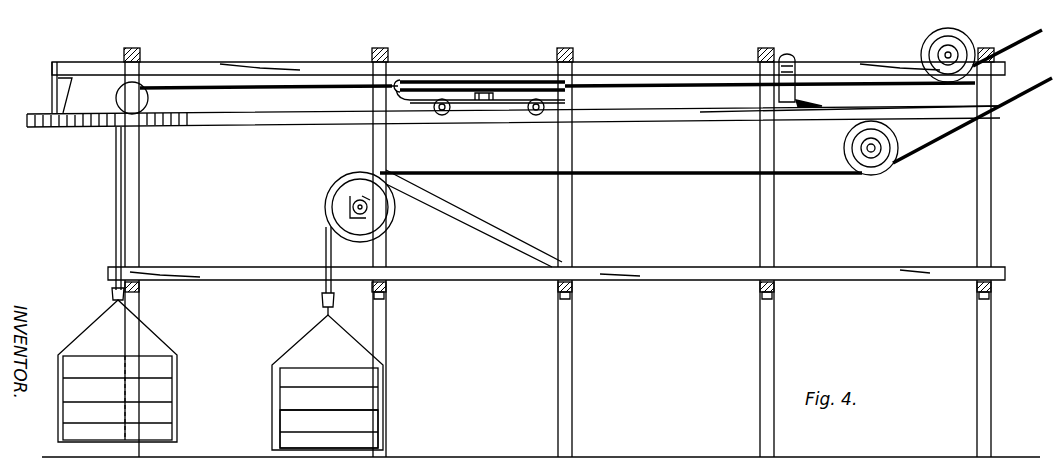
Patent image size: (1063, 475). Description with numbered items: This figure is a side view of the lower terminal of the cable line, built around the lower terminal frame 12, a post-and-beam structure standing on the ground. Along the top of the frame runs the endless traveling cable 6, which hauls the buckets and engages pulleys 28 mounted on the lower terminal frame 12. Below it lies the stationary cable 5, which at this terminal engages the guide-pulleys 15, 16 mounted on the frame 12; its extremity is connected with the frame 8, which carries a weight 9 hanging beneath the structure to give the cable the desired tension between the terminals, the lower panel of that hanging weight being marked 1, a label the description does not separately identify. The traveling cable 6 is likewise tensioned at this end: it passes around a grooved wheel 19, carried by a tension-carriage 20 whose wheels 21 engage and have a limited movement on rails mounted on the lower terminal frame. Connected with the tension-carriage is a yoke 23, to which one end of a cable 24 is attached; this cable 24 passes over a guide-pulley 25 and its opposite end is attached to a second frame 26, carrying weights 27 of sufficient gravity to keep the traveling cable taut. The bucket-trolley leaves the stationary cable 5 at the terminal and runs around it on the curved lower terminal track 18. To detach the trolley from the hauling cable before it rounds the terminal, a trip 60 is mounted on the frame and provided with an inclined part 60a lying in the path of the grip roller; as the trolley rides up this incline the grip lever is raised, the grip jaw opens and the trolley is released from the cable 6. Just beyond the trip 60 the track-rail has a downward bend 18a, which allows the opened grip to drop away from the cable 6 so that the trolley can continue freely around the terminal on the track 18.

The bucket 1 is at (329, 429).
The stationary cable 5 is at (648, 172).
The endless traveling cable 6 is at (662, 84).
The frame 8 is at (292, 347).
The weight 9 is at (329, 408).
The lower terminal frame 12 is at (558, 259).
The guide-pulley 15 is at (845, 148).
The guide-pulley 16 is at (348, 181).
The lower terminal track 18 is at (273, 124).
The downward bend in the track-rail 18a is at (738, 118).
The wheel 19 is at (492, 80).
The tension-carriage 20 is at (497, 104).
The wheels 21 is at (443, 116).
The yoke 23 is at (414, 103).
The cable 24 is at (225, 87).
The guide-pulley 25 is at (145, 95).
The frame 26 is at (165, 342).
The weights 27 is at (117, 398).
The pulleys 28 is at (962, 42).
The trip 60 is at (793, 70).
The inclined part 60a is at (825, 98).